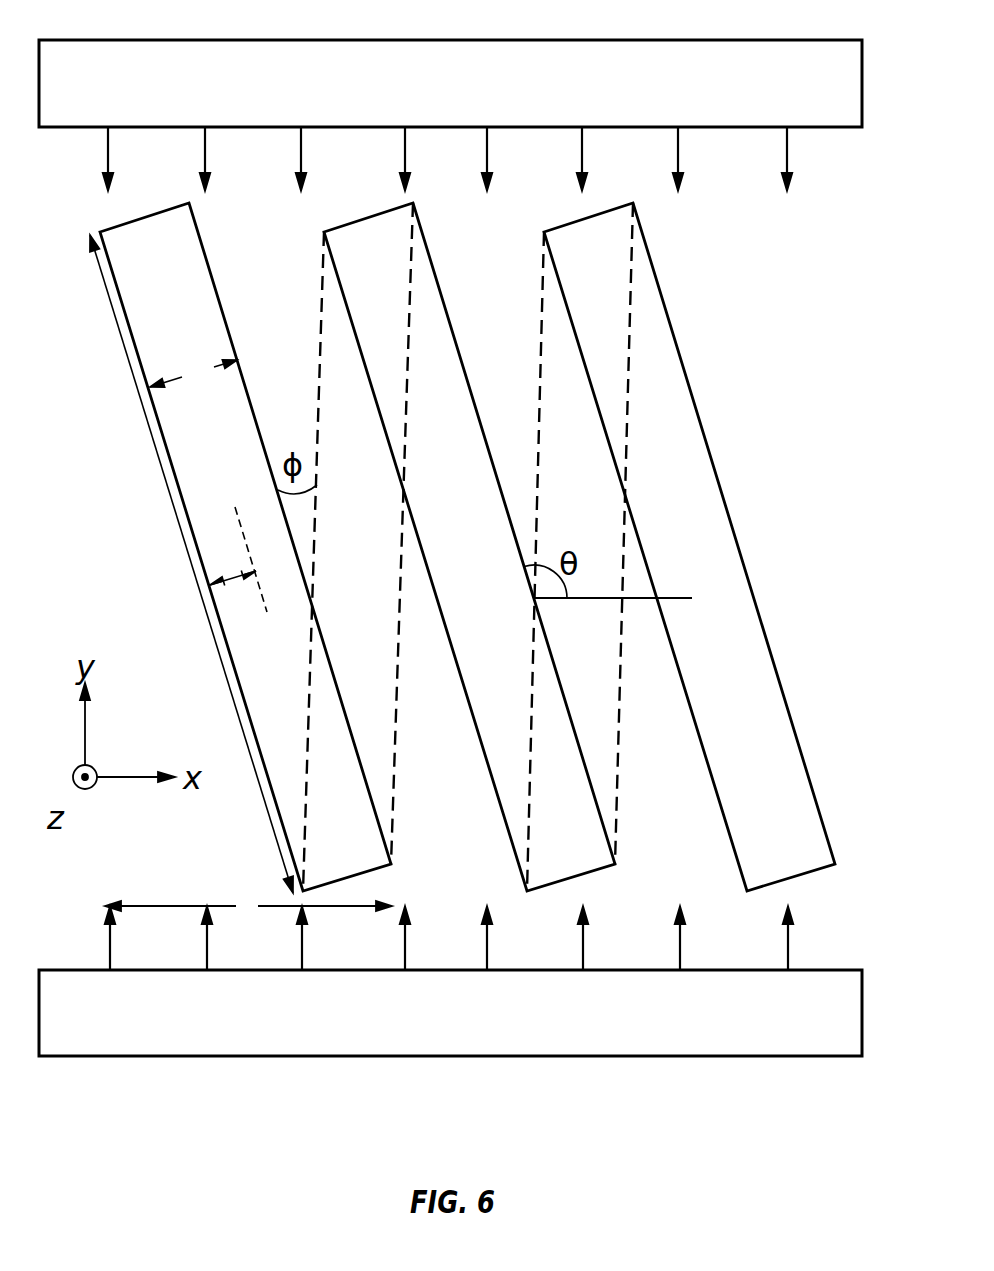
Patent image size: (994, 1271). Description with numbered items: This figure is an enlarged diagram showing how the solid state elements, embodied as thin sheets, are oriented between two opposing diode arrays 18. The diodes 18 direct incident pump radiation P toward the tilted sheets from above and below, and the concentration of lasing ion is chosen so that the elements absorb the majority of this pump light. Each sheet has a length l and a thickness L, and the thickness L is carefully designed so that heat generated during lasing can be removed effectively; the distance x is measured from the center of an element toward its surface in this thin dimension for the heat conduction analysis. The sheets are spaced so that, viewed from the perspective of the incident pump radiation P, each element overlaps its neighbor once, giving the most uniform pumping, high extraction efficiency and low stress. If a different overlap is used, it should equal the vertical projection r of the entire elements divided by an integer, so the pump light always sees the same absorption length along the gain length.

The diodes 18 is at (757, 40).
The incident pump radiation P is at (448, 548).
The length l is at (191, 564).
The thickness L is at (193, 373).
The distance from center of element x is at (238, 562).
The vertical projection of the entire elements r is at (248, 906).